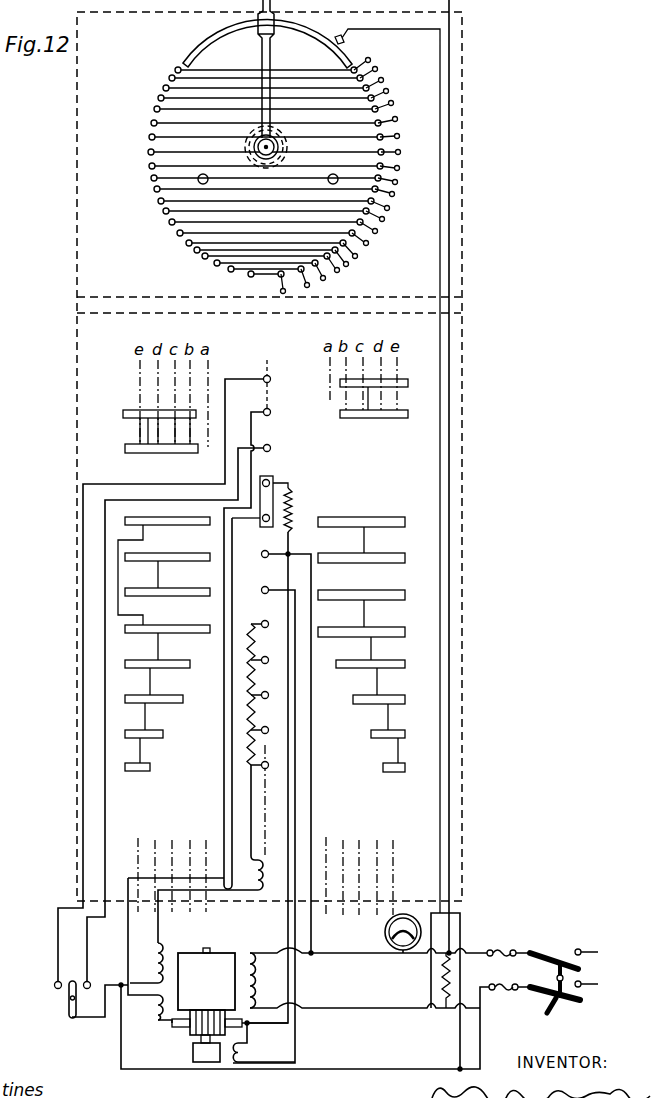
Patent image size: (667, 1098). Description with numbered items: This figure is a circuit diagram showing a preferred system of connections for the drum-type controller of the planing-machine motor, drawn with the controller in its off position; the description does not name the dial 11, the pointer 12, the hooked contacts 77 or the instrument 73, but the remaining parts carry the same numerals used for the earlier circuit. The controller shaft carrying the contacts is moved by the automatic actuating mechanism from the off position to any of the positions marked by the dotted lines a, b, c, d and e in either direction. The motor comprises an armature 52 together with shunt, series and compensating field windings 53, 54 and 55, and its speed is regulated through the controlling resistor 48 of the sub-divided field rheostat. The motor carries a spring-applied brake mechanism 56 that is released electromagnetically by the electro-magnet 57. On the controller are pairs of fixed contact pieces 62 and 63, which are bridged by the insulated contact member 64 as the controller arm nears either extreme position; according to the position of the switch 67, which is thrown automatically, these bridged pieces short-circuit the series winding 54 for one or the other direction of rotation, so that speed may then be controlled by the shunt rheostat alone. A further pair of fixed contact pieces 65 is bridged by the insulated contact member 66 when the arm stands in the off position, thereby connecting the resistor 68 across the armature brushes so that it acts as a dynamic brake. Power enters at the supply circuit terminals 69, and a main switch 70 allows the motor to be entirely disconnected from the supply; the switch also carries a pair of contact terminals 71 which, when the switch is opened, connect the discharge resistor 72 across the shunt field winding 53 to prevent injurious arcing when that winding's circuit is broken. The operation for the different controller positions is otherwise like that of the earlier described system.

The contact dial 11 is at (243, 172).
The pointer arm 12 is at (257, 46).
The hook contacts 77 is at (375, 242).
The controlling resistor 48 is at (262, 695).
The armature 52 is at (207, 995).
The shunt field winding 53 is at (266, 980).
The series field winding 54 is at (156, 962).
The compensating field winding 55 is at (156, 1005).
The brake mechanism 56 is at (193, 1052).
The electro-magnet 57 is at (264, 1052).
The fixed contact pieces 62 is at (279, 388).
The fixed contact pieces 63 is at (270, 446).
The insulated contact member 64 is at (124, 425).
The fixed contact pieces 65 is at (273, 478).
The insulated contact member 66 is at (262, 503).
The switch 67 is at (69, 997).
The resistor 68 is at (300, 510).
The supply circuit terminals 69 is at (590, 968).
The main switch 70 is at (554, 966).
The contact terminals 71 is at (556, 1009).
The discharge resistor 72 is at (444, 1005).
The meter 73 is at (403, 955).